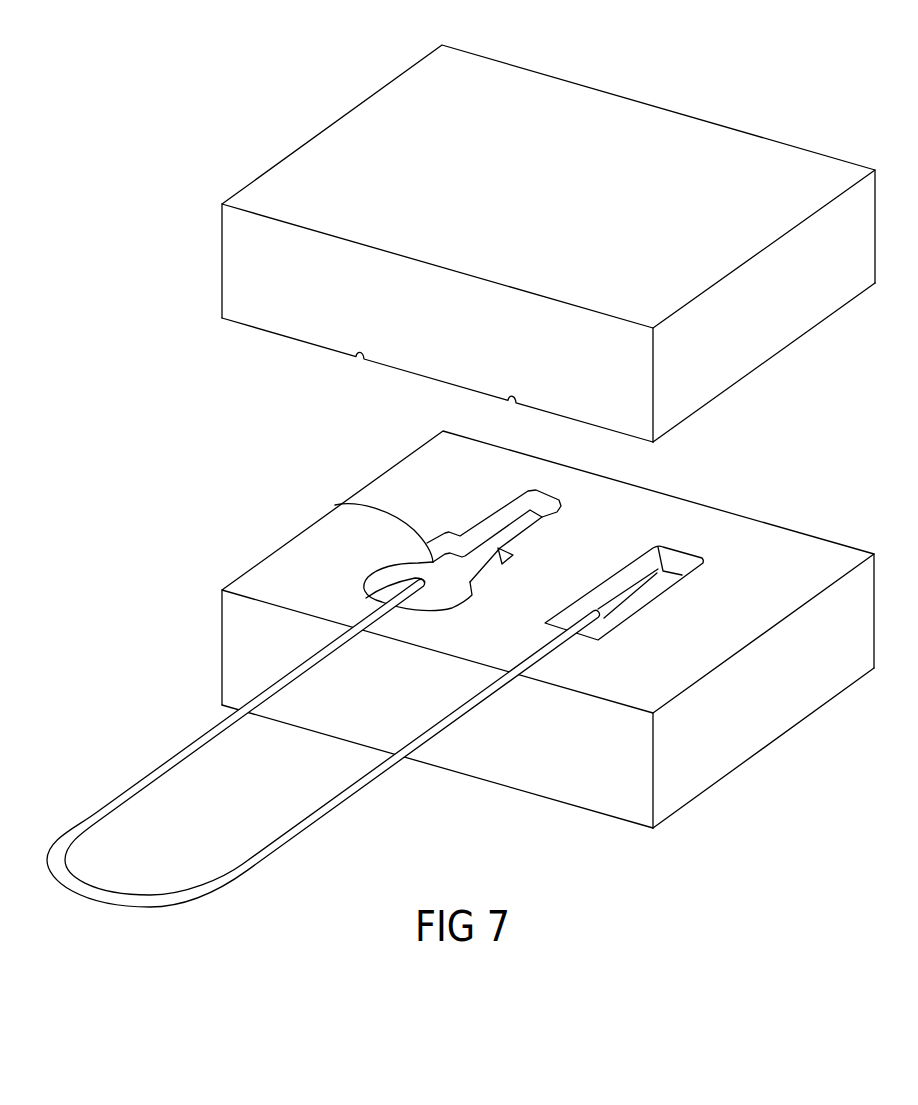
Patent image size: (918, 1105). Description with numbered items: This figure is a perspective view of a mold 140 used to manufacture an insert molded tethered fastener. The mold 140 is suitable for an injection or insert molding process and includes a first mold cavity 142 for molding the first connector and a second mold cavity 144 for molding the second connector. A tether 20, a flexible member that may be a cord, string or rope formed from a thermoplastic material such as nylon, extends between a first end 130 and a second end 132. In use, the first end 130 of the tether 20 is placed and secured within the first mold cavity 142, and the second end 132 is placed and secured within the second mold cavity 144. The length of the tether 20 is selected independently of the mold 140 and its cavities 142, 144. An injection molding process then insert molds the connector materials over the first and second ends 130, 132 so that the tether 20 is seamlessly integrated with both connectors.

The tether 20 is at (126, 786).
The first end 130 is at (663, 571).
The second end 132 is at (335, 505).
The mold 140 is at (318, 98).
The first mold cavity 142 is at (722, 553).
The second mold cavity 144 is at (585, 507).